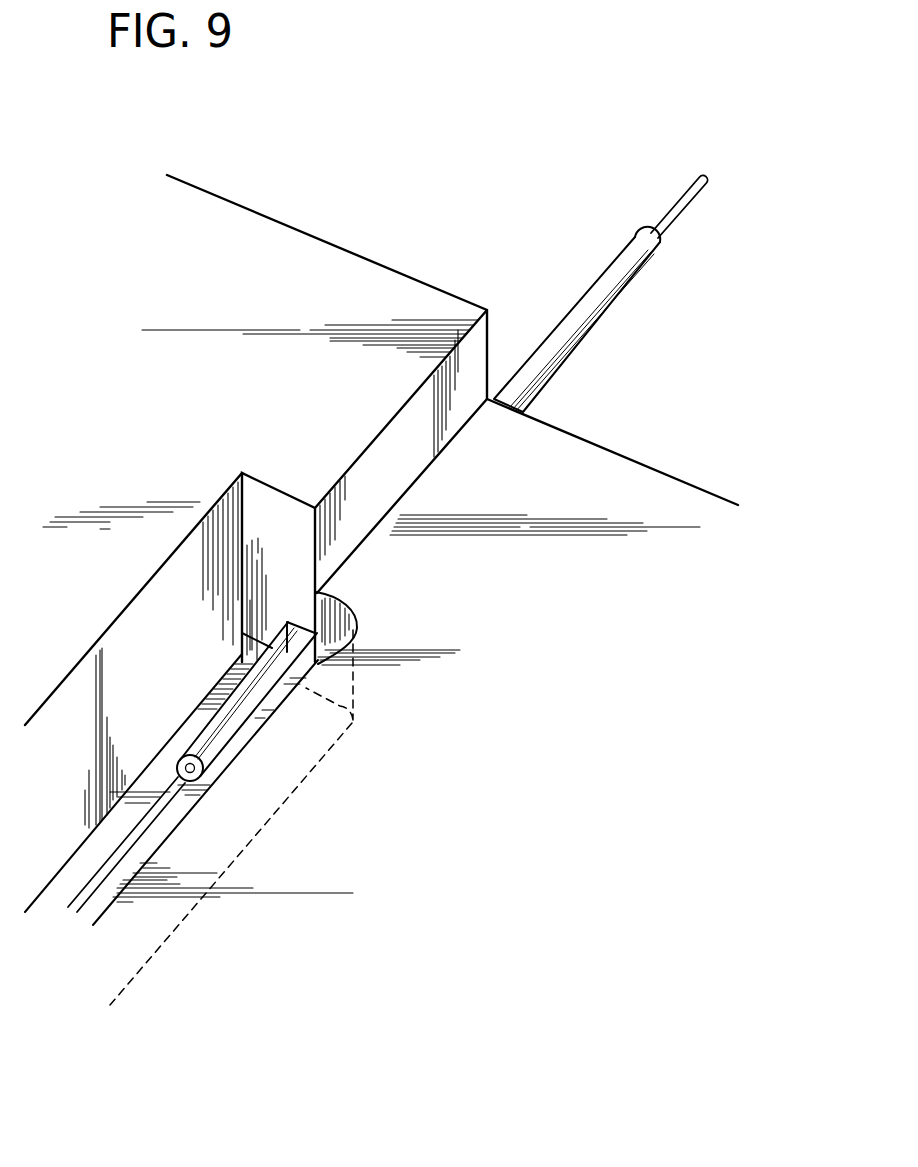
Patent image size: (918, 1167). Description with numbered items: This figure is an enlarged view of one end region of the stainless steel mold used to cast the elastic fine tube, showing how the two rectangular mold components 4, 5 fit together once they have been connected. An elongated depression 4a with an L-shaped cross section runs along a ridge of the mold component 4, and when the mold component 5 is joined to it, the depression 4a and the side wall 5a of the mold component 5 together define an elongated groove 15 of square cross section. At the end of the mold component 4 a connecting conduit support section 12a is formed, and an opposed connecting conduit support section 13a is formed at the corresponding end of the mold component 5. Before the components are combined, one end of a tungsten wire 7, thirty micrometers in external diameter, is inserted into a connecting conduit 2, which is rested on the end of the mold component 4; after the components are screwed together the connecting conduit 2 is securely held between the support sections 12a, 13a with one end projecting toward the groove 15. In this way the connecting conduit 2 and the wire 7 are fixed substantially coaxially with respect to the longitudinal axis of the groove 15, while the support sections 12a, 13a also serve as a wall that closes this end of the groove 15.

The mold component 5 is at (368, 290).
The side wall 5a is at (75, 722).
The connecting conduit support section 13a is at (282, 540).
The connecting conduit support section 12a is at (253, 648).
The elongated groove 15 is at (165, 823).
The mold component 4 is at (620, 478).
The elongated depression 4a is at (297, 749).
The connecting conduit 2 is at (612, 288).
The tungsten wire 7 is at (686, 204).